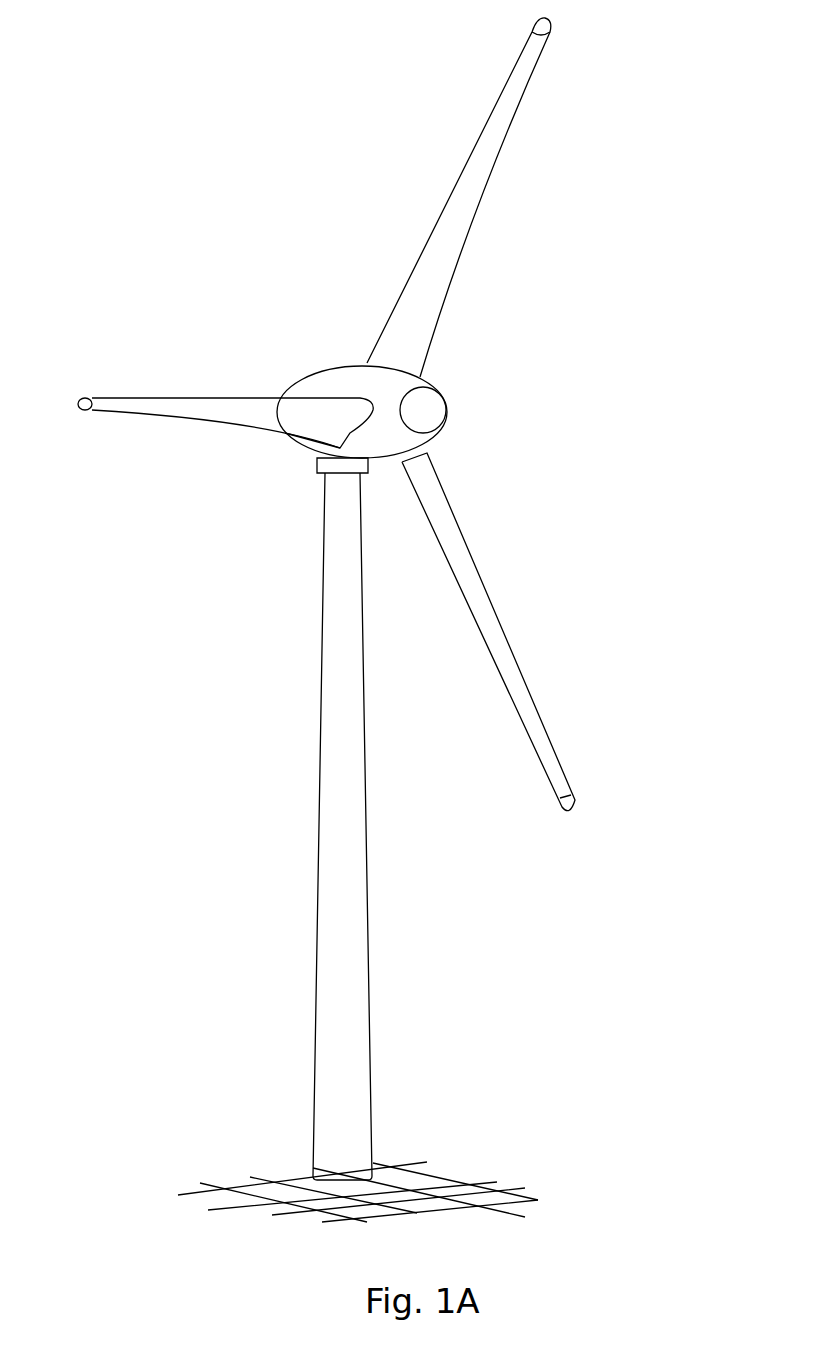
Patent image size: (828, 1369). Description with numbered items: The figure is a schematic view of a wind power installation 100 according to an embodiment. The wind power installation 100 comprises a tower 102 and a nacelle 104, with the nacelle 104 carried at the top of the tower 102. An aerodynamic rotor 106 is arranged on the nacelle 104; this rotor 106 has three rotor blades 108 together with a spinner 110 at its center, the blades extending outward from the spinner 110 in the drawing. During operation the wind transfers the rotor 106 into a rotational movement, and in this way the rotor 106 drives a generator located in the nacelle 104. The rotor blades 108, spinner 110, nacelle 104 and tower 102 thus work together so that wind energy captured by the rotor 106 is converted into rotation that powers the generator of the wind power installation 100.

The wind power installation 100 is at (275, 545).
The tower 102 is at (355, 907).
The nacelle 104 is at (337, 385).
The aerodynamic rotor 106 is at (515, 332).
The rotor blades 108 is at (487, 158).
The spinner 110 is at (430, 412).